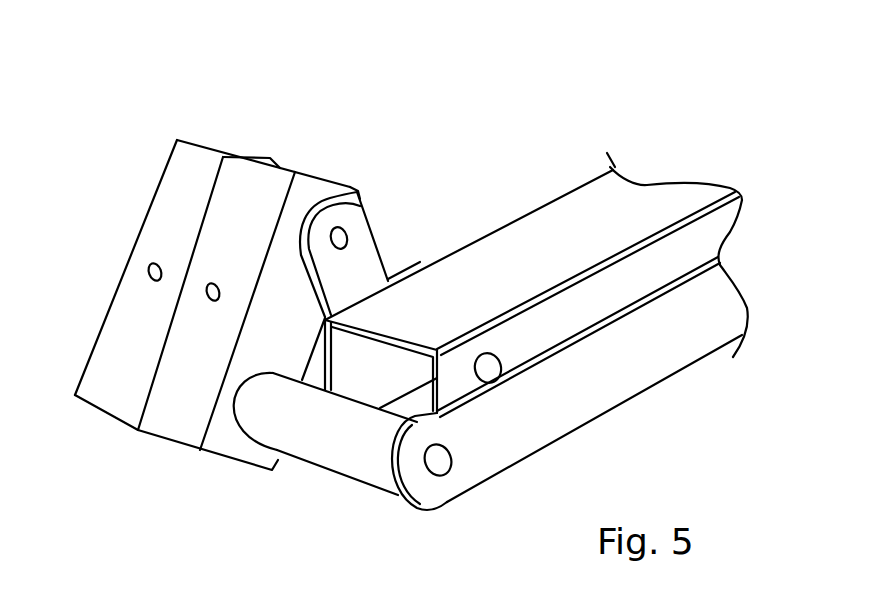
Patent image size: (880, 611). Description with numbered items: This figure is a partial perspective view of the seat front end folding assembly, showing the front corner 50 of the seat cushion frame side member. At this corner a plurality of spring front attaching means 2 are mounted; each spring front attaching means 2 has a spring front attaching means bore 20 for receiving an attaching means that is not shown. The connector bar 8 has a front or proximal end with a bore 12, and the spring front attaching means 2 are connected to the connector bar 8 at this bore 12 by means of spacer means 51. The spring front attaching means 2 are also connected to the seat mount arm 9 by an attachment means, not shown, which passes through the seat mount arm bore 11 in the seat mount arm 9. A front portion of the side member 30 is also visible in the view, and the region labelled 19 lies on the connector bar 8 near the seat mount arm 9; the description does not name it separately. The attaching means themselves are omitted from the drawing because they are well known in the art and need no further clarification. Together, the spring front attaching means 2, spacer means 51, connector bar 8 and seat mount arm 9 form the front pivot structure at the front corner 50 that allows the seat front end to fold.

The spring front attaching means 2 is at (262, 182).
The spring front attaching means bore 20 is at (206, 286).
The seat mount arm bore 11 is at (345, 224).
The seat mount arm 9 is at (360, 261).
The recess 19 is at (428, 257).
The front portion of side member 30 is at (650, 200).
The connector bar 8 is at (640, 365).
The bore 12 is at (438, 460).
The spacer means 51 is at (327, 443).
The front corner 50 is at (475, 109).